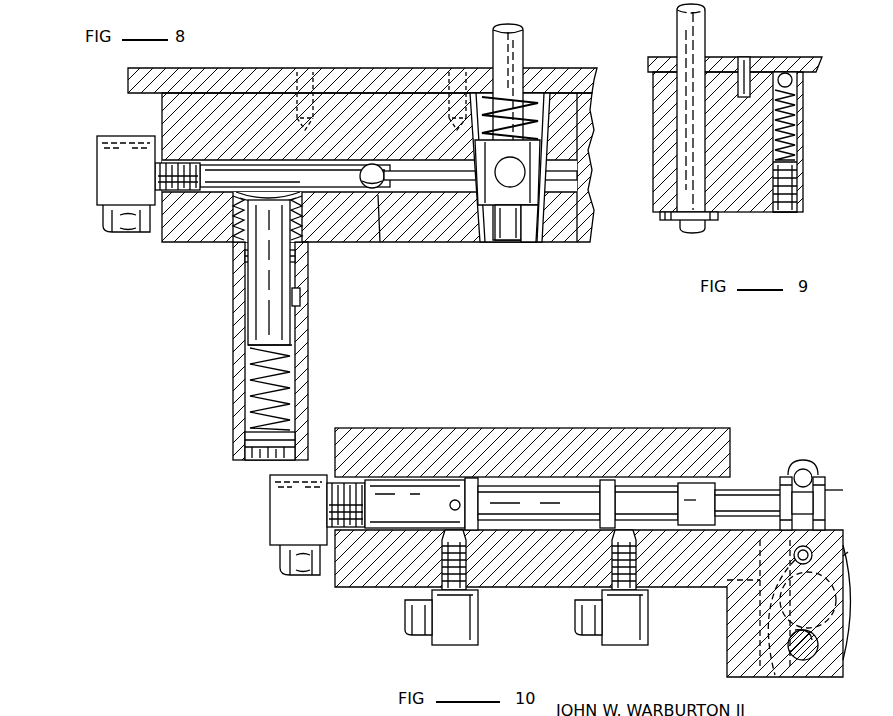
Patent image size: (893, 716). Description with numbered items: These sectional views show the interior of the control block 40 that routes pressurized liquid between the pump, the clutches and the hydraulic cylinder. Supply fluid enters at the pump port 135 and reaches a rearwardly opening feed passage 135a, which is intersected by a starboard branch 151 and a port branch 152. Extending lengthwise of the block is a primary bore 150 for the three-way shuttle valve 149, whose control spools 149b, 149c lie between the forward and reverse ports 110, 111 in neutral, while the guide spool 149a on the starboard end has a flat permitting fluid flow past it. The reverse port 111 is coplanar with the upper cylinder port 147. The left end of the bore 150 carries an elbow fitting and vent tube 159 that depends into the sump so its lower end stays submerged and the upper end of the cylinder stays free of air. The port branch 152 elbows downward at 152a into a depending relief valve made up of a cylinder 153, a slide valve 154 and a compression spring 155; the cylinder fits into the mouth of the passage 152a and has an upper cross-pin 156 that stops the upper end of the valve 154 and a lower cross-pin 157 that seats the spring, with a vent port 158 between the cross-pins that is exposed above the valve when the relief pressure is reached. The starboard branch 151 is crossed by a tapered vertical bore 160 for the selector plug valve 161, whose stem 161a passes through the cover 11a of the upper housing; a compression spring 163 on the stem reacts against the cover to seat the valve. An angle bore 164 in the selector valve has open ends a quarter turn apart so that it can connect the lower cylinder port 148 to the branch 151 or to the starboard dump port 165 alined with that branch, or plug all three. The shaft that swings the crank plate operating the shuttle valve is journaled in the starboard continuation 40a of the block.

In FIG. 8, the cover 11a is at (236, 78).
In FIG. 8, the control block 40 is at (432, 222).
In FIG. 10, the control block 40 is at (430, 430).
In FIG. 8, the starboard continuation 40a is at (585, 232).
In FIG. 9, the starboard continuation 40a is at (756, 200).
In FIG. 10, the starboard continuation 40a is at (732, 613).
In FIG. 10, the forward port 110 is at (614, 540).
In FIG. 10, the reverse port 111 is at (472, 560).
In FIG. 8, the pump supply port 135 is at (458, 0).
In FIG. 8, the feed passage 135a is at (382, 240).
In FIG. 10, the upper cylinder port 147 is at (456, 503).
In FIG. 8, the lower cylinder port 148 is at (598, 0).
In FIG. 10, the three-way shuttle valve 149 is at (535, 492).
In FIG. 10, the guide spool 149a is at (698, 492).
In FIG. 10, the control spool 149b is at (608, 488).
In FIG. 10, the control spool 149c is at (472, 484).
In FIG. 10, the primary bore 150 is at (406, 522).
In FIG. 8, the starboard branch 151 is at (476, 226).
In FIG. 8, the port branch 152 is at (340, 184).
In FIG. 10, the port branch 152 is at (818, 484).
In FIG. 8, the elbow passage 152a is at (236, 238).
In FIG. 8, the cylinder 153 is at (300, 366).
In FIG. 10, the cylinder 153 is at (805, 468).
In FIG. 8, the slide valve 154 is at (253, 306).
In FIG. 9, the slide valve 154 is at (810, 58).
In FIG. 10, the slide valve 154 is at (828, 496).
In FIG. 8, the compression spring 155 is at (255, 390).
In FIG. 9, the compression spring 155 is at (686, 26).
In FIG. 10, the compression spring 155 is at (790, 640).
In FIG. 8, the upper cross-pin 156 is at (300, 258).
In FIG. 9, the upper cross-pin 156 is at (792, 84).
In FIG. 10, the upper cross-pin 156 is at (810, 548).
In FIG. 8, the lower cross-pin 157 is at (296, 444).
In FIG. 9, the lower cross-pin 157 is at (783, 62).
In FIG. 10, the lower cross-pin 157 is at (836, 566).
In FIG. 8, the vent port 158 is at (303, 296).
In FIG. 9, the vent port 158 is at (752, 56).
In FIG. 10, the vent port 158 is at (730, 596).
In FIG. 8, the elbow fitting and vent tube 159 is at (130, 140).
In FIG. 10, the elbow fitting and vent tube 159 is at (275, 562).
In FIG. 8, the tapered vertical bore 160 is at (530, 244).
In FIG. 9, the tapered vertical bore 160 is at (738, 56).
In FIG. 10, the tapered vertical bore 160 is at (740, 640).
In FIG. 8, the selector plug valve 161 is at (505, 242).
In FIG. 8, the stem 161a is at (520, 50).
In FIG. 8, the compression spring 163 is at (548, 93).
In FIG. 8, the angle bore 164 is at (512, 168).
In FIG. 8, the starboard dump port 165 is at (570, 176).